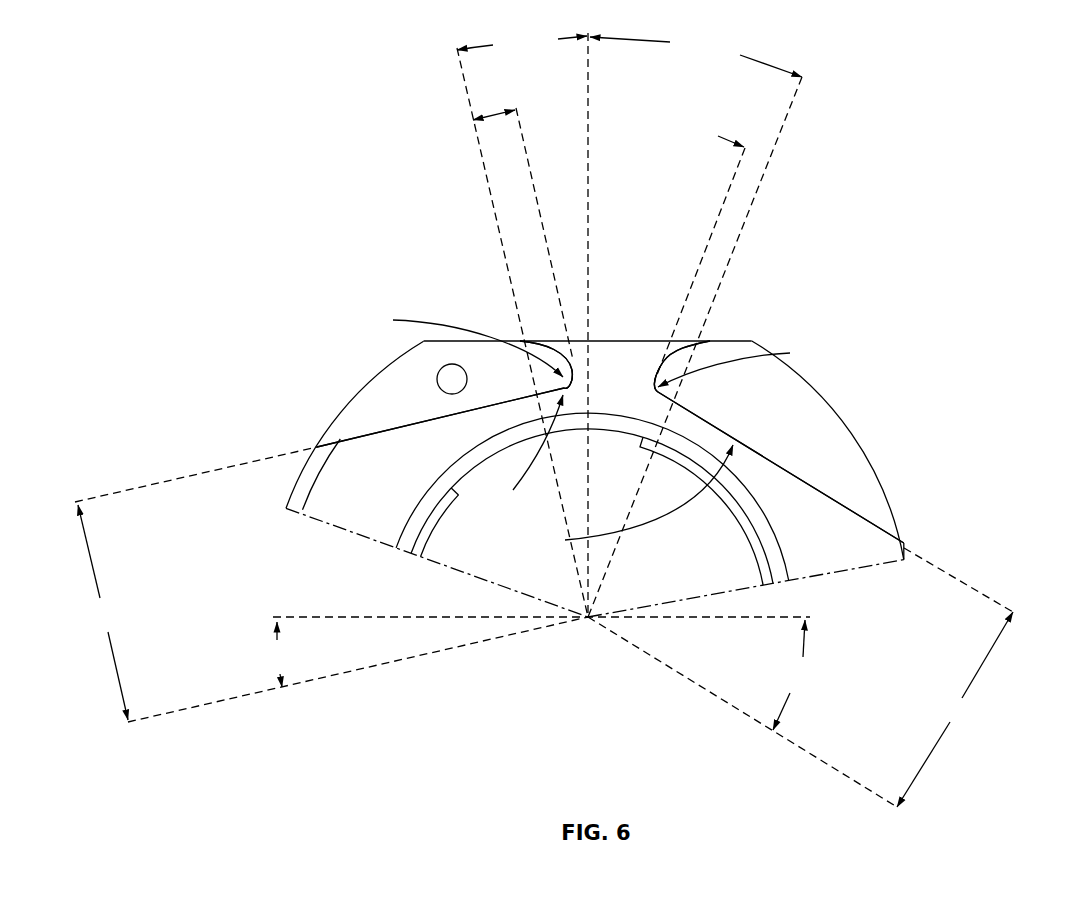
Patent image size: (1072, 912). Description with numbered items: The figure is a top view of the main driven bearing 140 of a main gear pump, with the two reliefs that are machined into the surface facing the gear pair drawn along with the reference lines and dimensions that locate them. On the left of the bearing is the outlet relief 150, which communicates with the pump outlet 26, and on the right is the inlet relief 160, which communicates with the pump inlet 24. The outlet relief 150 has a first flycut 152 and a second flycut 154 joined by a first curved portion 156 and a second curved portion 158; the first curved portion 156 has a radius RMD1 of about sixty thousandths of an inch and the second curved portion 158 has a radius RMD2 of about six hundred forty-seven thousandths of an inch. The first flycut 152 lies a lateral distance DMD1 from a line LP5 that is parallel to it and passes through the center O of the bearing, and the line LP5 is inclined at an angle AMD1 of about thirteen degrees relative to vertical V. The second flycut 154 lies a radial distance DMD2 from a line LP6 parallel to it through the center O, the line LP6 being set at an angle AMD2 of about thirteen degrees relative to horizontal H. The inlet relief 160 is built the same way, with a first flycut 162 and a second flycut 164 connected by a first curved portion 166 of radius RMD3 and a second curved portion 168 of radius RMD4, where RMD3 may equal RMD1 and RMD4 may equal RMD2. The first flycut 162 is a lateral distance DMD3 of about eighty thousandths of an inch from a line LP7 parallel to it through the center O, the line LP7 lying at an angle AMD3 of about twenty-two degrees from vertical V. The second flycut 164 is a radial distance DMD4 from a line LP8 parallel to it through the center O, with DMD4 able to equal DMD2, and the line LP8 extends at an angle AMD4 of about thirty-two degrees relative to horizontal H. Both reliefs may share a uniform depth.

The driven bearing 140 is at (233, 66).
The outlet 26 is at (193, 246).
The inlet 24 is at (965, 246).
The outlet relief 150 is at (400, 367).
The first flycut 152 is at (573, 363).
The second flycut 154 is at (347, 437).
The first curved portion 156 is at (567, 387).
The second curved portion 158 is at (547, 437).
The inlet relief 160 is at (874, 483).
The first flycut 162 is at (708, 342).
The second flycut 164 is at (892, 538).
The first curved portion 166 is at (668, 388).
The second curved portion 168 is at (703, 419).
The vertical V is at (588, 190).
The horizontal H is at (340, 617).
The center O is at (588, 633).
The line LP5 is at (487, 177).
The line LP6 is at (425, 657).
The line LP7 is at (752, 210).
The line LP8 is at (823, 765).
The angle AMD1 is at (522, 43).
The angle AMD2 is at (277, 654).
The angle AMD3 is at (696, 57).
The angle AMD4 is at (798, 675).
The lateral distance DMD1 is at (491, 116).
The radial distance DMD2 is at (195, 583).
The lateral distance DMD3 is at (775, 162).
The radial distance DMD4 is at (955, 677).
The radius RMD1 is at (443, 343).
The radius RMD2 is at (523, 453).
The radius RMD3 is at (759, 365).
The radius RMD4 is at (611, 498).